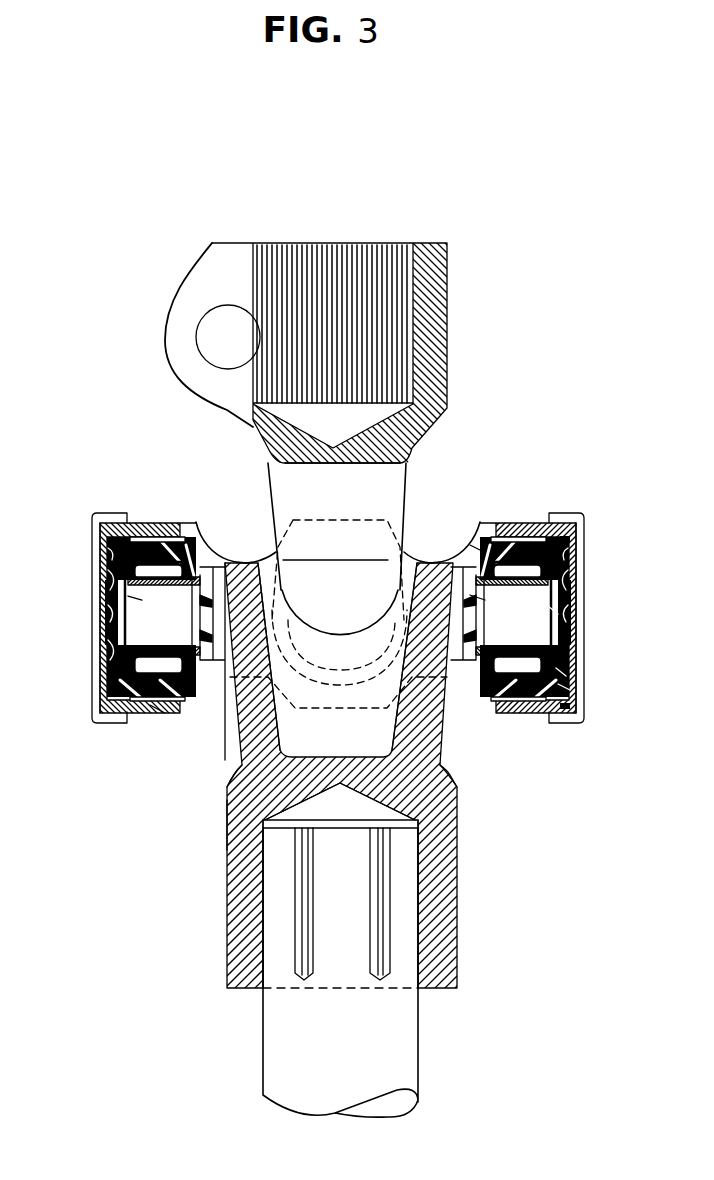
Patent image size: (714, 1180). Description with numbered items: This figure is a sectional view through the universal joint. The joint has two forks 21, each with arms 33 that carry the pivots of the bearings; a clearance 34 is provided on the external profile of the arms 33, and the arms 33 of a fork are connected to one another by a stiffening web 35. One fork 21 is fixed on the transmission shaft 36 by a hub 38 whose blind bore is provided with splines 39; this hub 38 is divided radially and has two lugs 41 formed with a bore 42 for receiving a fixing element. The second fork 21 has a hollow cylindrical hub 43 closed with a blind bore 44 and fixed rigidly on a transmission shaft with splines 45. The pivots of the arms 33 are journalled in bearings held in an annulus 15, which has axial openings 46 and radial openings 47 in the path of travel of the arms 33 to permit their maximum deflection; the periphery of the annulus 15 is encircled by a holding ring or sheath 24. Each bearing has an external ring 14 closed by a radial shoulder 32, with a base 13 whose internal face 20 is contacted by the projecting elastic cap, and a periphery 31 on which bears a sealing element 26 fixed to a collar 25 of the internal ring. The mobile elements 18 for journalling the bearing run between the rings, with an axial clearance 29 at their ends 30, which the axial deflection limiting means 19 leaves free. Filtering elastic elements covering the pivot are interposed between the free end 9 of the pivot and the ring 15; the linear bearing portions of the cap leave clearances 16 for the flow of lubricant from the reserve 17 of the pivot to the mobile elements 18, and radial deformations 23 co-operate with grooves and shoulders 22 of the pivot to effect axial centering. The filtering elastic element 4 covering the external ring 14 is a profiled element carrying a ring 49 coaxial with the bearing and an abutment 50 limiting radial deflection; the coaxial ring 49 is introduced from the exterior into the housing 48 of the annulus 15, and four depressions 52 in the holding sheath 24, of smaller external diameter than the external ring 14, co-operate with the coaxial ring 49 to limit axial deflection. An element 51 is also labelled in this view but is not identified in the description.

The filtering elastic element 4 is at (107, 573).
The free end of the pivot 9 is at (117, 610).
The base of the external ring 13 is at (563, 673).
The external ring 14 is at (568, 683).
The annulus 15 is at (140, 717).
The clearances 16 is at (97, 683).
The reserve 17 is at (533, 653).
The mobile elements 18 is at (150, 528).
The axial deflection limiting means 19 is at (103, 653).
The internal face of the base 20 is at (130, 600).
The fork 21 is at (413, 792).
The grooves and shoulders 22 is at (225, 562).
The radial deformations 23 is at (478, 597).
The holding sheath 24 is at (568, 512).
The collar 25 is at (215, 547).
The sealing element 26 is at (183, 683).
The axial clearance 29 is at (105, 552).
The ends of the mobile elements 30 is at (162, 710).
The periphery of the external ring 31 is at (137, 522).
The radial shoulder 32 is at (475, 547).
The arms 33 is at (397, 473).
The clearance 34 is at (240, 778).
The stiffening web 35 is at (267, 825).
The transmission shaft 36 is at (407, 1027).
The fixing hub 38 is at (437, 267).
The splines 39 is at (368, 262).
The lugs 41 is at (212, 282).
The bore 42 is at (205, 340).
The hollow cylindrical hub 43 is at (245, 890).
The blind bore 44 is at (262, 950).
The splines 45 is at (298, 975).
The axial openings 46 is at (283, 522).
The radial openings 47 is at (185, 537).
The housing 48 is at (105, 527).
The coaxial ring 49 is at (112, 713).
The abutment 50 is at (177, 527).
The seal ring 51 is at (568, 540).
The depressions 52 is at (550, 610).